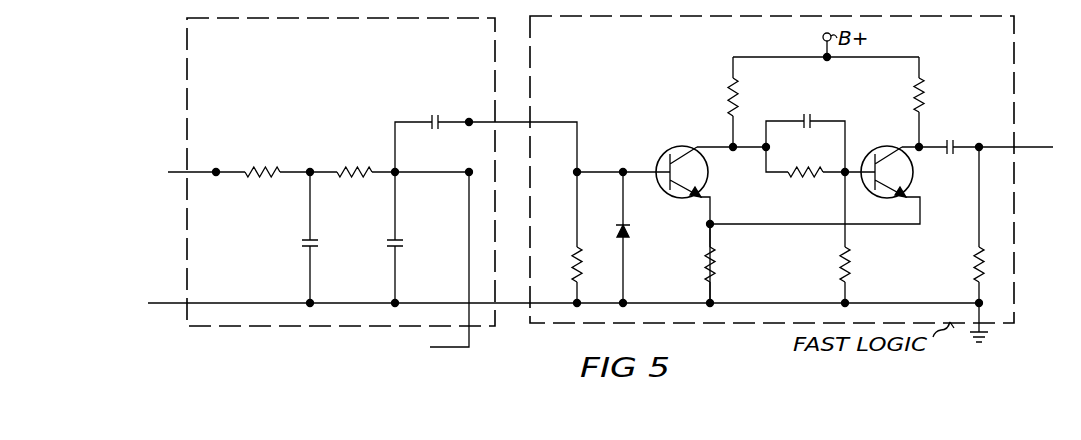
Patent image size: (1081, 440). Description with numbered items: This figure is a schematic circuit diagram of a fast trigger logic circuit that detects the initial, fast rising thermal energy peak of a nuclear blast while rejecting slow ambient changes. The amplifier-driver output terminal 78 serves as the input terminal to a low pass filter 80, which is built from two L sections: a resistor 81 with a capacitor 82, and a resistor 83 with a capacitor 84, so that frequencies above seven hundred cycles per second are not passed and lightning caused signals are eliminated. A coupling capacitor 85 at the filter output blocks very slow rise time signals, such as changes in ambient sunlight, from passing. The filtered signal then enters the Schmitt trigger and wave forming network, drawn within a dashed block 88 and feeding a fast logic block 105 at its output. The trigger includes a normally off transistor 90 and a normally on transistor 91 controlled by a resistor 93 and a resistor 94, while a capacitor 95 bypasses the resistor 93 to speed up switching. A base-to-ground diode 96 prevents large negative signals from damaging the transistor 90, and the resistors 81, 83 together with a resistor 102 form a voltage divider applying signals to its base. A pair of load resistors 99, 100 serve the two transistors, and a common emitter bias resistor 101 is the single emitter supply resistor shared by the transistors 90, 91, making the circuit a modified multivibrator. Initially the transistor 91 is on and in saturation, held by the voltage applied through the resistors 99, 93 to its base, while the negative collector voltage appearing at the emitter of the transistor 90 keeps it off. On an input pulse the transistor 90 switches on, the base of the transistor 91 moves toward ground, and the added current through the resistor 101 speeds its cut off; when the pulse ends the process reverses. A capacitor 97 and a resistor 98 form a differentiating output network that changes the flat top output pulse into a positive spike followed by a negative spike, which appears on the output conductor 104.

The amplifier-driver output terminal 78 is at (160, 173).
The low pass filter 80 is at (278, 341).
The resistor 81 is at (272, 167).
The capacitor 82 is at (297, 250).
The resistor 83 is at (365, 165).
The capacitor 84 is at (382, 250).
The coupling capacitor 85 is at (445, 121).
The Schmidt trigger 88 is at (831, 16).
The transistor 90 is at (707, 181).
The transistor 91 is at (910, 180).
The resistor 93 is at (823, 150).
The resistor 94 is at (849, 268).
The capacitor 95 is at (801, 117).
The base-to-ground diode 96 is at (628, 235).
The capacitor 97 is at (953, 141).
The resistor 98 is at (972, 269).
The load resistor 99 is at (722, 109).
The load resistor 100 is at (924, 98).
The common emitter bias resistor 101 is at (714, 267).
The resistor 102 is at (574, 257).
The conductor 104 is at (1020, 147).
The output line to fast logic 105 is at (426, 353).